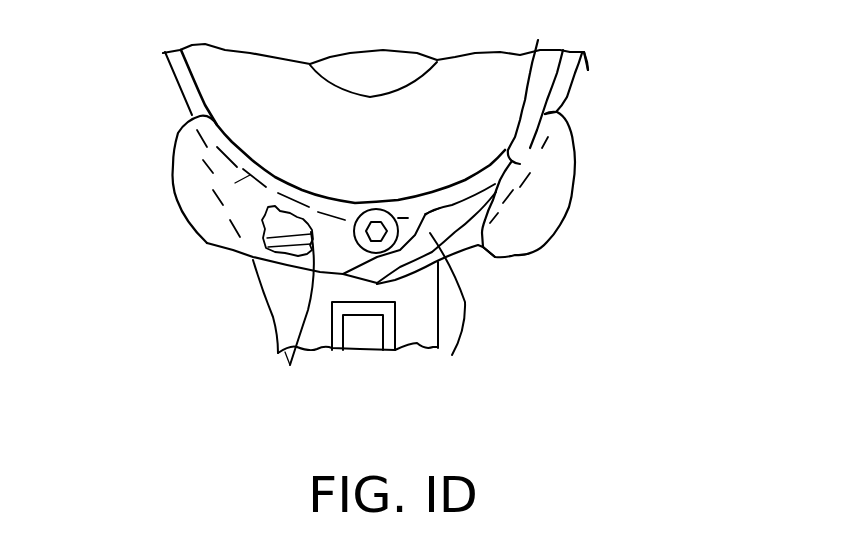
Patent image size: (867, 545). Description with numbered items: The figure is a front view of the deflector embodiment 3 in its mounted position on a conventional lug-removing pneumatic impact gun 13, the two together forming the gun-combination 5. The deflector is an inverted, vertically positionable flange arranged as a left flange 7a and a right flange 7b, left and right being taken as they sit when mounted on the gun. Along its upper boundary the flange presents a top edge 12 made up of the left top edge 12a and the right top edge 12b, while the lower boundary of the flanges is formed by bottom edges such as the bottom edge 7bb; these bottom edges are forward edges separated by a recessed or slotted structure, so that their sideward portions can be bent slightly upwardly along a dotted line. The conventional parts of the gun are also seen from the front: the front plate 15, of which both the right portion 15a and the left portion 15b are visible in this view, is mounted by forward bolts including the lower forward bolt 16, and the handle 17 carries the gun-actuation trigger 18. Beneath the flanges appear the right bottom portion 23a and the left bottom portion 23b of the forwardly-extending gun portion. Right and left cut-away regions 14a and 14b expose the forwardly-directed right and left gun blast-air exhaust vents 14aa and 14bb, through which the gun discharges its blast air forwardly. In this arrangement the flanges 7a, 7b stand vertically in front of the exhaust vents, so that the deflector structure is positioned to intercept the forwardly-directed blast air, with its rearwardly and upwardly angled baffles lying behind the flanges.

The embodiment 3 is at (205, 248).
The gun-combination 5 is at (633, 74).
The left flange 7a is at (223, 163).
The right flange 7b is at (540, 188).
The bottom edge 7bb is at (495, 255).
The cup body 12 is at (365, 203).
The left top edge 12a is at (239, 145).
The right top edge 12b is at (528, 82).
The lug-removing pneumatic impact gun 13 is at (588, 70).
The left strap 14a is at (255, 258).
The right gun blast-air exhaust vent 14aa is at (303, 385).
The right strap 14b is at (420, 254).
The left gun blast-air exhaust vent 14bb is at (448, 321).
The forward plate 15 is at (470, 240).
The right portion of front plate 15a is at (183, 70).
The left portion of front plate 15b is at (458, 187).
The lower forward bolt/screw 16 is at (373, 230).
The handle 17 is at (277, 337).
The gun-actuation trigger 18 is at (367, 337).
The right bottom portion of forwardly-extending gun portion 23a is at (235, 183).
The left bottom portion of forwardly-extending gun portion 23b is at (520, 164).